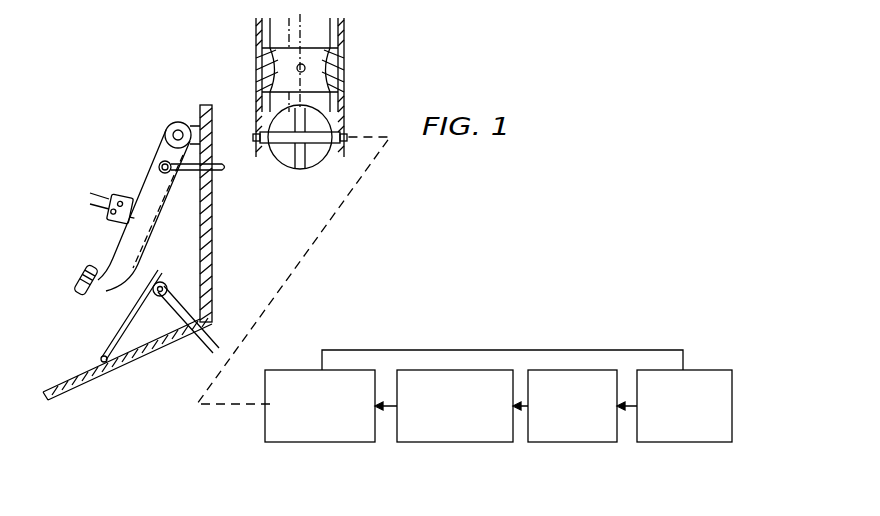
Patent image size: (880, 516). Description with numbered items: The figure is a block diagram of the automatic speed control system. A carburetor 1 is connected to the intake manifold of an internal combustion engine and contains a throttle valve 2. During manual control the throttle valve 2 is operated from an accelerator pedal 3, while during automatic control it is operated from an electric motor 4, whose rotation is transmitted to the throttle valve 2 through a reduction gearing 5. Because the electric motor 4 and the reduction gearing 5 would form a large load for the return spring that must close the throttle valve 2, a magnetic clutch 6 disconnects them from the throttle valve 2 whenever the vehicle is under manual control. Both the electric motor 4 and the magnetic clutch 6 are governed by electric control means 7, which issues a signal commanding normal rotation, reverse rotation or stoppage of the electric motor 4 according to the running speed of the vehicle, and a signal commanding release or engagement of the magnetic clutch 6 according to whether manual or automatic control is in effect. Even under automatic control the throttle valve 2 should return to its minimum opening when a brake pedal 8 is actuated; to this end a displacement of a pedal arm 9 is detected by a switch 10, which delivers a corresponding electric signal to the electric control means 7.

The carburetor 1 is at (336, 27).
The throttle valve 2 is at (300, 167).
The accelerator pedal 3 is at (128, 318).
The electric motor 4 is at (556, 442).
The reduction gearing 5 is at (442, 442).
The magnetic clutch 6 is at (318, 442).
The electric control means 7 is at (672, 442).
The brake pedal 8 is at (85, 266).
The pedal arm 9 is at (156, 178).
The switch 10 is at (120, 196).